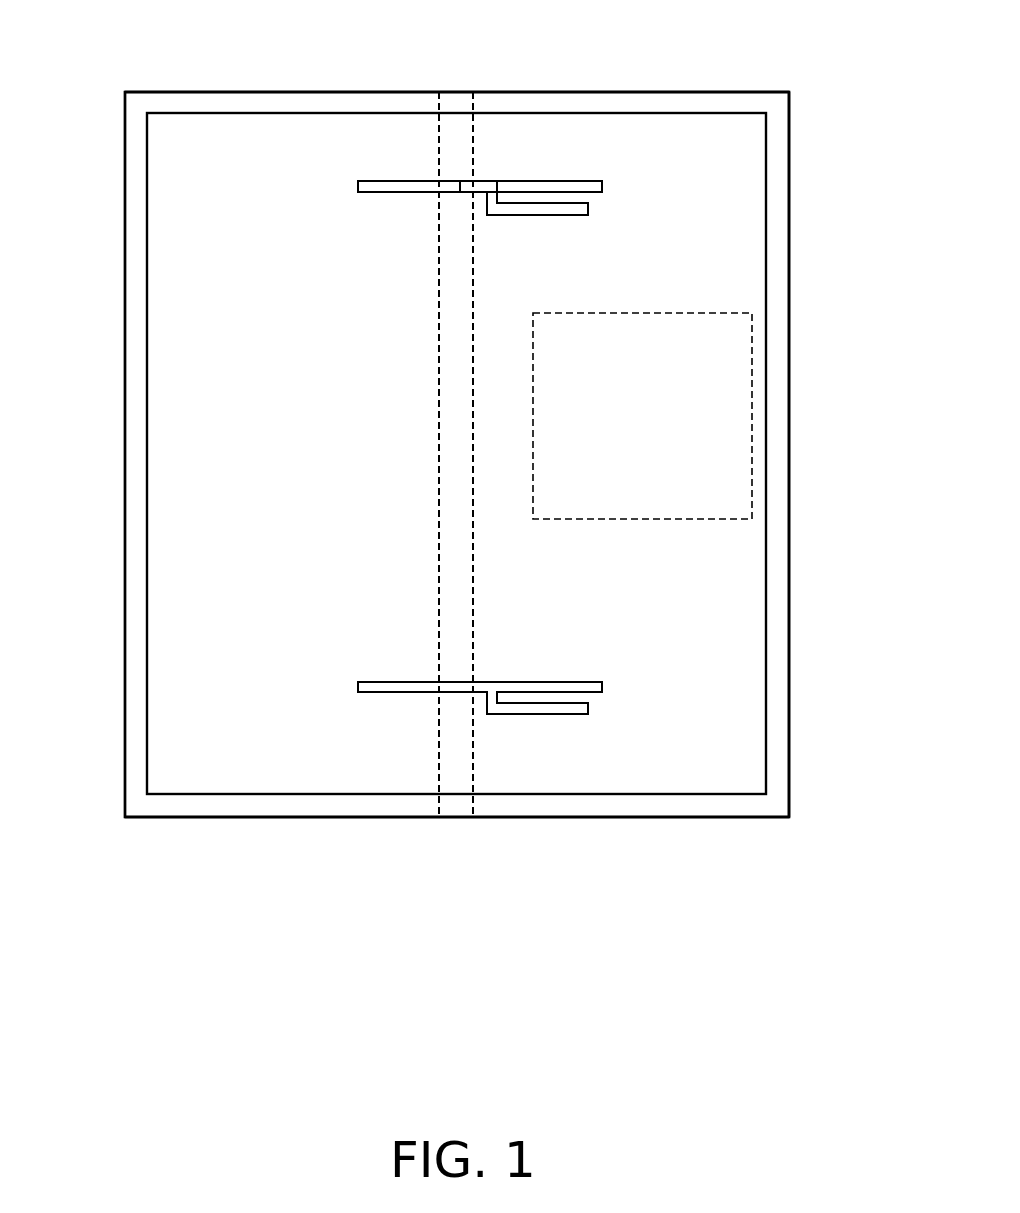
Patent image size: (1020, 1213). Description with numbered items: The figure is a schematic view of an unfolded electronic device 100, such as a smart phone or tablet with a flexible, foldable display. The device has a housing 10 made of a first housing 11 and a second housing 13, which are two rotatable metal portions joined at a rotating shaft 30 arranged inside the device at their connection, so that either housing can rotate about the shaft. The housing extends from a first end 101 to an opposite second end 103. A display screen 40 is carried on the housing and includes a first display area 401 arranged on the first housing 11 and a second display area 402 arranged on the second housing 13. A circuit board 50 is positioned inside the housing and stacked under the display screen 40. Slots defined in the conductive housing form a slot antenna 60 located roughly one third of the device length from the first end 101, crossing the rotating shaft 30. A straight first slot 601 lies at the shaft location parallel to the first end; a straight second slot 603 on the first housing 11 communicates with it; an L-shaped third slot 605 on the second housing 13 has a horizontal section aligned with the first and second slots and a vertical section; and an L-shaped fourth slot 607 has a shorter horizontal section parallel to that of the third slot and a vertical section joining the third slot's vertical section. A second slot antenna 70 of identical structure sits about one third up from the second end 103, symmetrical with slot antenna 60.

The electronic device 100 is at (418, 37).
The housing 10 is at (770, 90).
The first housing 11 is at (257, 100).
The second housing 13 is at (662, 102).
The second end 103 is at (240, 818).
The first end 101 is at (467, 92).
The rotating shaft 30 is at (475, 490).
The circuit board 50 is at (752, 393).
The display screen 40 is at (548, 908).
The first display area 401 is at (382, 790).
The second display area 402 is at (563, 790).
The slot antenna 60 is at (538, 172).
The first slot 601 is at (453, 183).
The second slot 603 is at (373, 187).
The third slot 605 is at (597, 178).
The fourth slot 607 is at (557, 210).
The slot antenna 70 is at (560, 667).